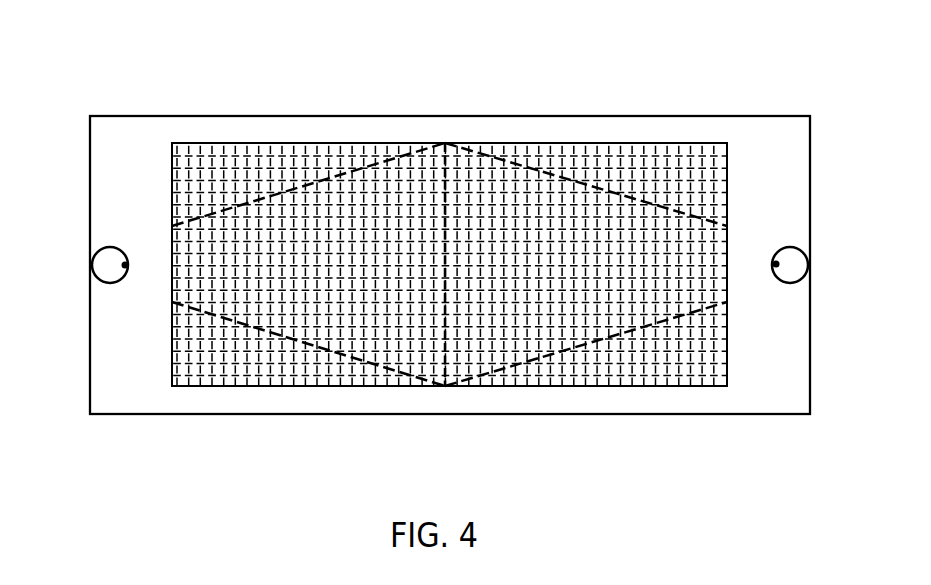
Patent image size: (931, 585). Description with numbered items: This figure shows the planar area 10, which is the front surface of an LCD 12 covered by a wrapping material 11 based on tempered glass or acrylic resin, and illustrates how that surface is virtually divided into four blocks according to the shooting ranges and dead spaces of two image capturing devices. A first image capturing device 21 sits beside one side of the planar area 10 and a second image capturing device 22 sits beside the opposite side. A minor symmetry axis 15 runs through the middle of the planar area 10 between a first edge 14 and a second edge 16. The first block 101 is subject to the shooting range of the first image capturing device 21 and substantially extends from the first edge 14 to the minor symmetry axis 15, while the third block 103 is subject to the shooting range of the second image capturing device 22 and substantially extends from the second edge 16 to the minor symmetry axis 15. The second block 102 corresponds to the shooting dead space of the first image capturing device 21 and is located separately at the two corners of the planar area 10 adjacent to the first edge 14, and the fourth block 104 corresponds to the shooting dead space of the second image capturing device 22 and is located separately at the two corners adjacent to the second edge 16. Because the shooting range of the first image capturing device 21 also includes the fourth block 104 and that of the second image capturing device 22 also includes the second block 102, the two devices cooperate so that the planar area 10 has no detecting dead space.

The planar area 10 is at (788, 108).
The wrapping material 11 is at (812, 141).
The LCD 12 is at (637, 135).
The first edge 14 is at (727, 263).
The minor symmetry axis 15 is at (450, 265).
The second edge 16 is at (172, 263).
The first image capturing device 21 is at (801, 250).
The second image capturing device 22 is at (89, 262).
The first block 101 is at (562, 280).
The second block 102 is at (662, 183).
The third block 103 is at (353, 280).
The fourth block 104 is at (257, 184).